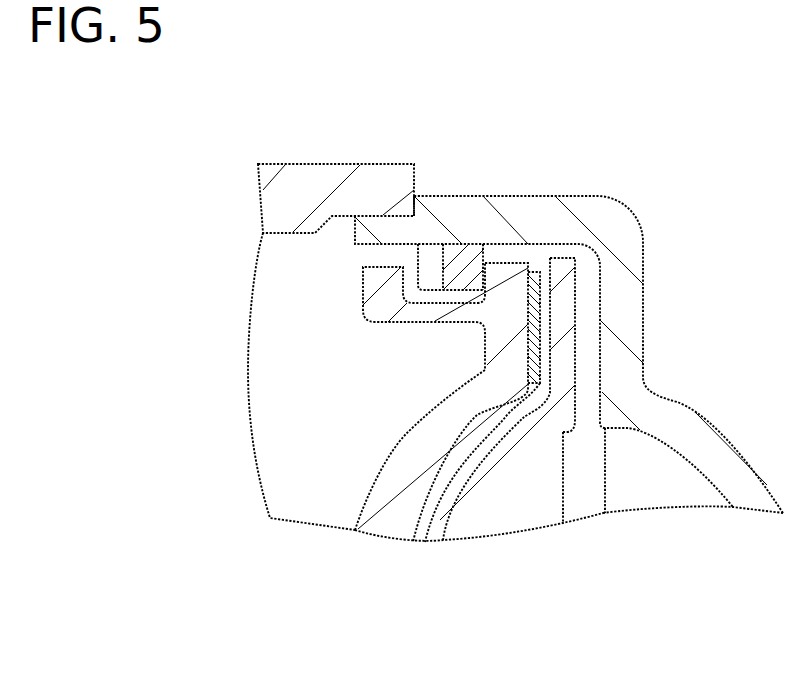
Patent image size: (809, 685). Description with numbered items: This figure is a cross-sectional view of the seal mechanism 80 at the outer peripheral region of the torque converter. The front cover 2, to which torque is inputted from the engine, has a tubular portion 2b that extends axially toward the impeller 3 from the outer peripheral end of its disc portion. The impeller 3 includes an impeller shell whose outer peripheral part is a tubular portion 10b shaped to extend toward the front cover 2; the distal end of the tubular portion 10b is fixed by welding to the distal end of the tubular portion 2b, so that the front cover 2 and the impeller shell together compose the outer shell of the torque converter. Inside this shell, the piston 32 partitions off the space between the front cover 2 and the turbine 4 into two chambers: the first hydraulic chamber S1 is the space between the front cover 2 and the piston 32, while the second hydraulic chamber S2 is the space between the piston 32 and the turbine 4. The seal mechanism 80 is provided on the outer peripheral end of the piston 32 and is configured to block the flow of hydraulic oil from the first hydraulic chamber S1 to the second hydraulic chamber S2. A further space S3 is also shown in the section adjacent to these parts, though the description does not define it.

The front cover 2 is at (276, 162).
The tubular portion 2b is at (312, 164).
The seal mechanism 80 is at (405, 258).
The tubular portion 10b is at (518, 196).
The first hydraulic chamber S1 is at (270, 315).
The piston 32 is at (372, 530).
The second hydraulic chamber S2 is at (418, 514).
The turbine 4 is at (447, 518).
The third space S3 is at (585, 508).
The impeller 3 is at (750, 503).